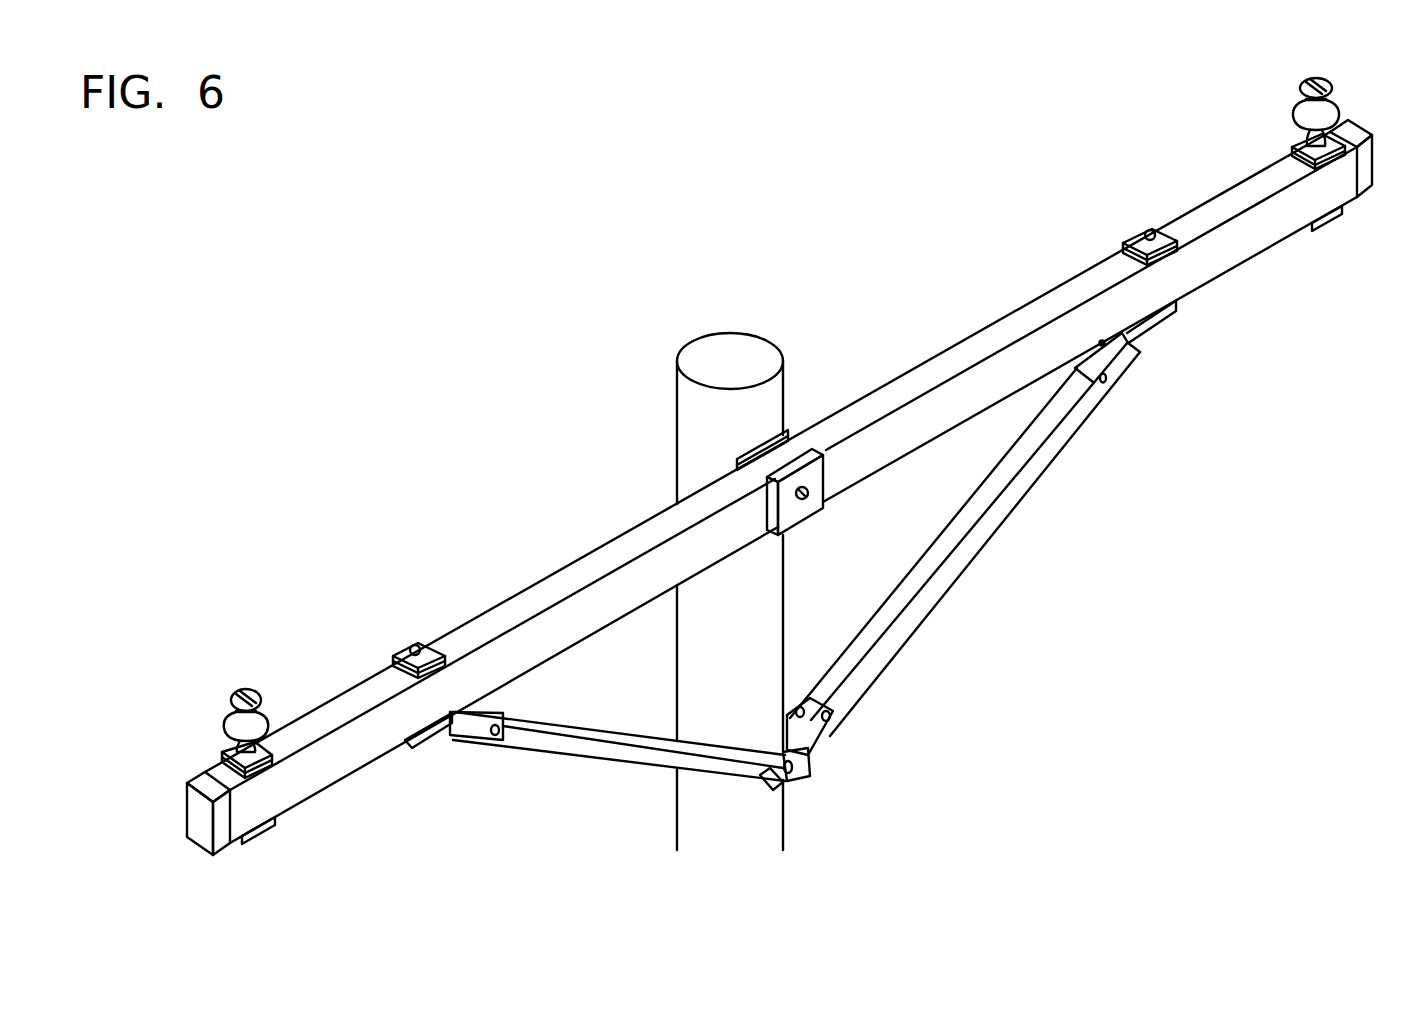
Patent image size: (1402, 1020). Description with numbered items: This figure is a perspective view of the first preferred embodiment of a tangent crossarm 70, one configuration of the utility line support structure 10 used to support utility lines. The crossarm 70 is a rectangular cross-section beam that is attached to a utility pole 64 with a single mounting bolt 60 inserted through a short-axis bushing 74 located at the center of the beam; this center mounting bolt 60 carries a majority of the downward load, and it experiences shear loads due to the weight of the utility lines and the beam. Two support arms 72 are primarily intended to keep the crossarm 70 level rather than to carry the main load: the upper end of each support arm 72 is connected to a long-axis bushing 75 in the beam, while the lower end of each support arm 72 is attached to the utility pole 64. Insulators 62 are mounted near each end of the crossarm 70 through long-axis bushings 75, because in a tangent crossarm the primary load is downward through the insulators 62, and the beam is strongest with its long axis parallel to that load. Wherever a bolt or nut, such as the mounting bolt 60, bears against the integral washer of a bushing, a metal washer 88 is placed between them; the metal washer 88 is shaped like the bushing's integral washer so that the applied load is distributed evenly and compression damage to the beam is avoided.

The utility line support structure 10 is at (373, 440).
The mounting bolt 60 is at (1150, 227).
The insulator 62 is at (1326, 80).
The utility pole 64 is at (686, 392).
The tangent crossarm 70 is at (1018, 247).
The support arm 72 is at (918, 628).
The short-axis bushing 74 is at (790, 430).
The long-axis bushing 75 is at (275, 818).
The metal washer 88 is at (230, 750).